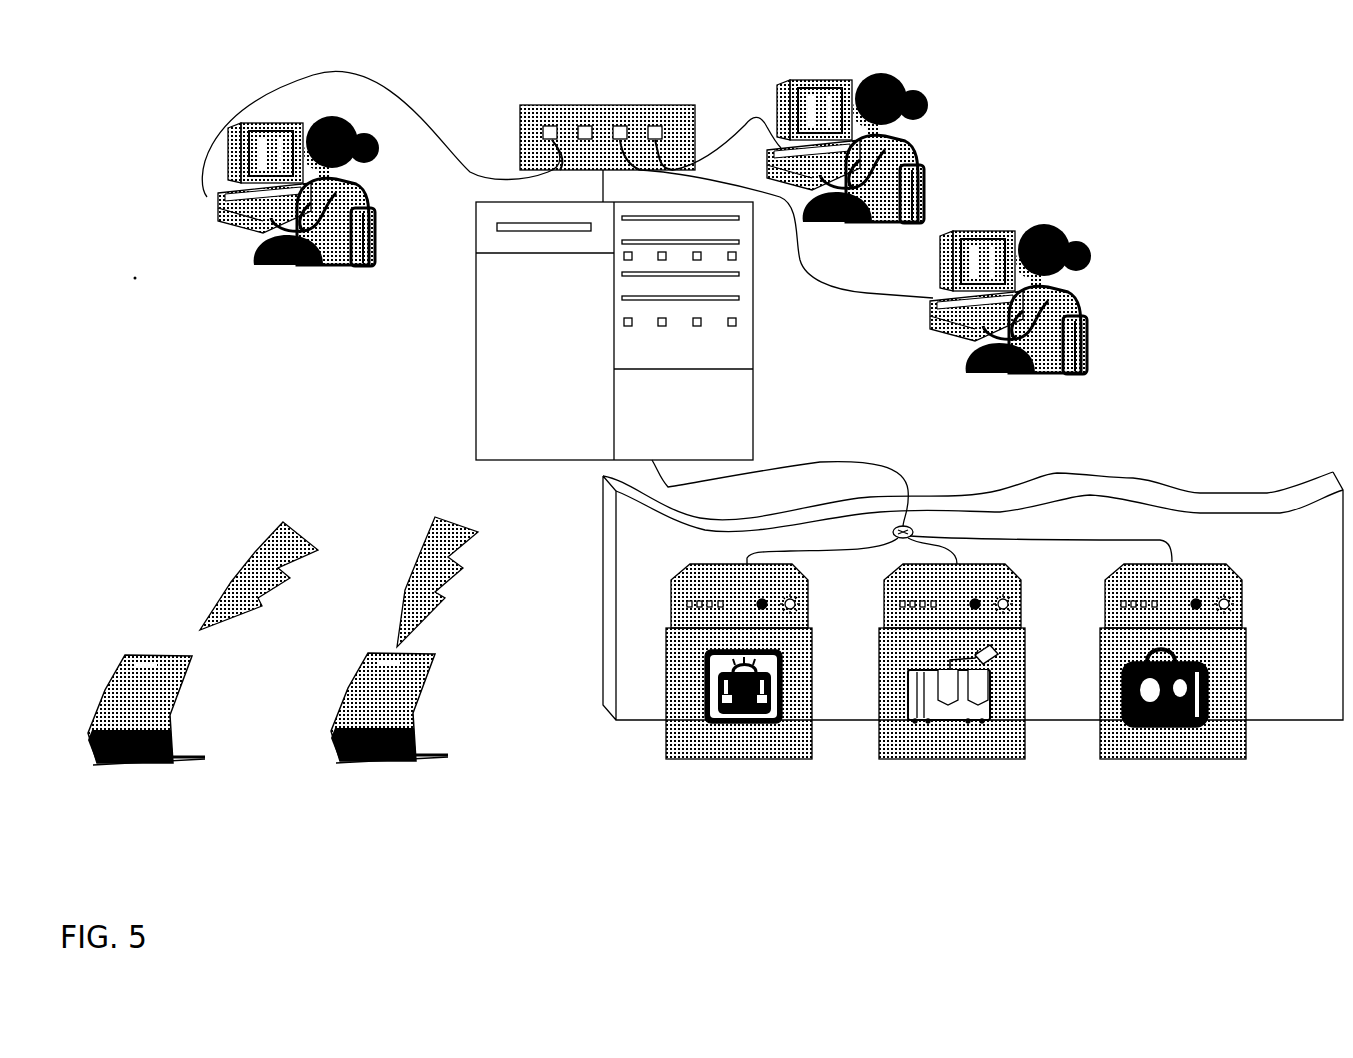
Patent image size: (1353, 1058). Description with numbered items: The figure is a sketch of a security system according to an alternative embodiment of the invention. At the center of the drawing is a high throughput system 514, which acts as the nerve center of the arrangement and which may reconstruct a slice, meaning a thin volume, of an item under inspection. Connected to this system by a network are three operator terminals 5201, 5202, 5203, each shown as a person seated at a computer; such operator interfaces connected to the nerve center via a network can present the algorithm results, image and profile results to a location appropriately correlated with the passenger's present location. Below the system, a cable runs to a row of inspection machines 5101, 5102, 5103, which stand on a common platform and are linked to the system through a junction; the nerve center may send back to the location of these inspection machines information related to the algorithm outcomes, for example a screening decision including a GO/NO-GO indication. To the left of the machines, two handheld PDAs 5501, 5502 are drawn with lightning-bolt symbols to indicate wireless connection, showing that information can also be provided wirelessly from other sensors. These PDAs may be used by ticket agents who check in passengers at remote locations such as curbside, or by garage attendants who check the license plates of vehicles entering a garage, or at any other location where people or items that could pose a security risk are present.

The high throughput system 514 is at (755, 407).
The user terminal 5201 is at (218, 213).
The user terminal 5202 is at (830, 78).
The user terminal 5203 is at (997, 227).
The inspection machine 5101 is at (745, 760).
The inspection machine 5102 is at (955, 760).
The inspection machine 5103 is at (1177, 760).
The PDA 5501 is at (105, 762).
The PDA 5502 is at (418, 763).